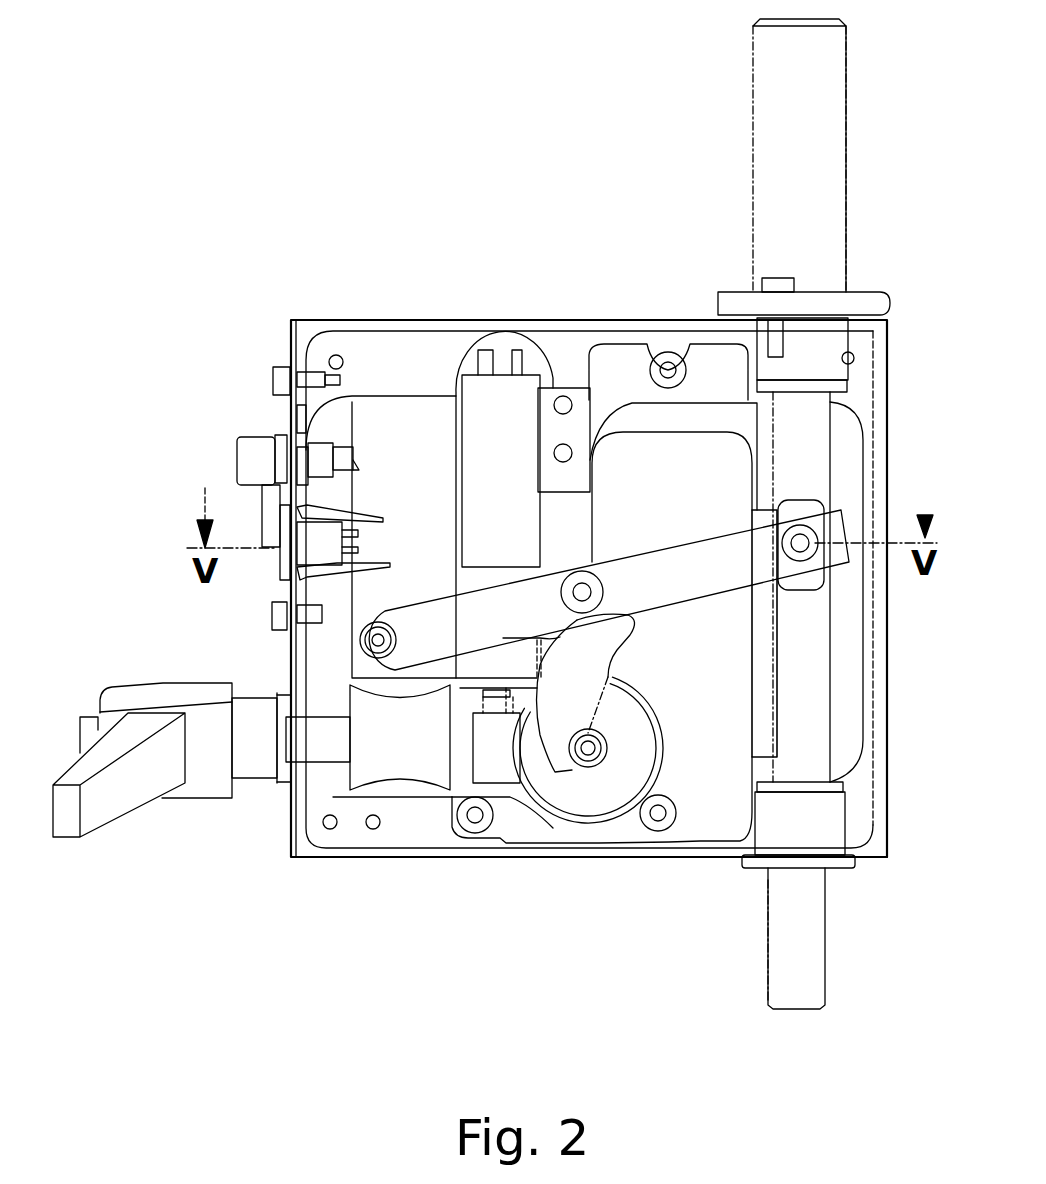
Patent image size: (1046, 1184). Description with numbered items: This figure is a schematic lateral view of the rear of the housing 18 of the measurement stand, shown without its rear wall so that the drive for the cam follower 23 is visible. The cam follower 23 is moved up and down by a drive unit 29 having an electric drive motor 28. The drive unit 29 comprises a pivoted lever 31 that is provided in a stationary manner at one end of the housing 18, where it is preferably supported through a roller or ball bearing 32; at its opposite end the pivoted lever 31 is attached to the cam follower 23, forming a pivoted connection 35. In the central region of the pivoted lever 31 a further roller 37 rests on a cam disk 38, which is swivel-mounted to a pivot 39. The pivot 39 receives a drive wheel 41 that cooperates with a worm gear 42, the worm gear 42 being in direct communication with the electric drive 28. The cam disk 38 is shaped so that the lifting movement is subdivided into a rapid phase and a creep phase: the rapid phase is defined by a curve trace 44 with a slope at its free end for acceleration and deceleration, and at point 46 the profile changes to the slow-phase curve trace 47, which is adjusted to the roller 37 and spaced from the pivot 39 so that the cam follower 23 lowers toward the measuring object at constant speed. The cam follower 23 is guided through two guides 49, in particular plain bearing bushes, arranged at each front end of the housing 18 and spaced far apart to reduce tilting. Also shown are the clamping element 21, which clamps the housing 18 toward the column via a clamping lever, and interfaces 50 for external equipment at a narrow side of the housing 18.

The housing 18 is at (568, 285).
The clamping element 21 is at (118, 665).
The cam follower 23 is at (805, 948).
The electric drive motor 28 is at (505, 385).
The drive unit 29 is at (556, 538).
The pivoted lever 31 is at (680, 550).
The roller or ball bearing 32 is at (366, 641).
The pivoted connection 35 is at (840, 497).
The roller 37 is at (580, 568).
The cam disk 38 is at (578, 667).
The pivot 39 is at (592, 748).
The drive wheel 41 is at (600, 820).
The worm gear 42 is at (473, 777).
The curve trace 44 is at (510, 640).
The point 46 is at (533, 773).
The curve trace 47 is at (557, 850).
The guide 49 is at (810, 343).
The interfaces 50 is at (248, 494).